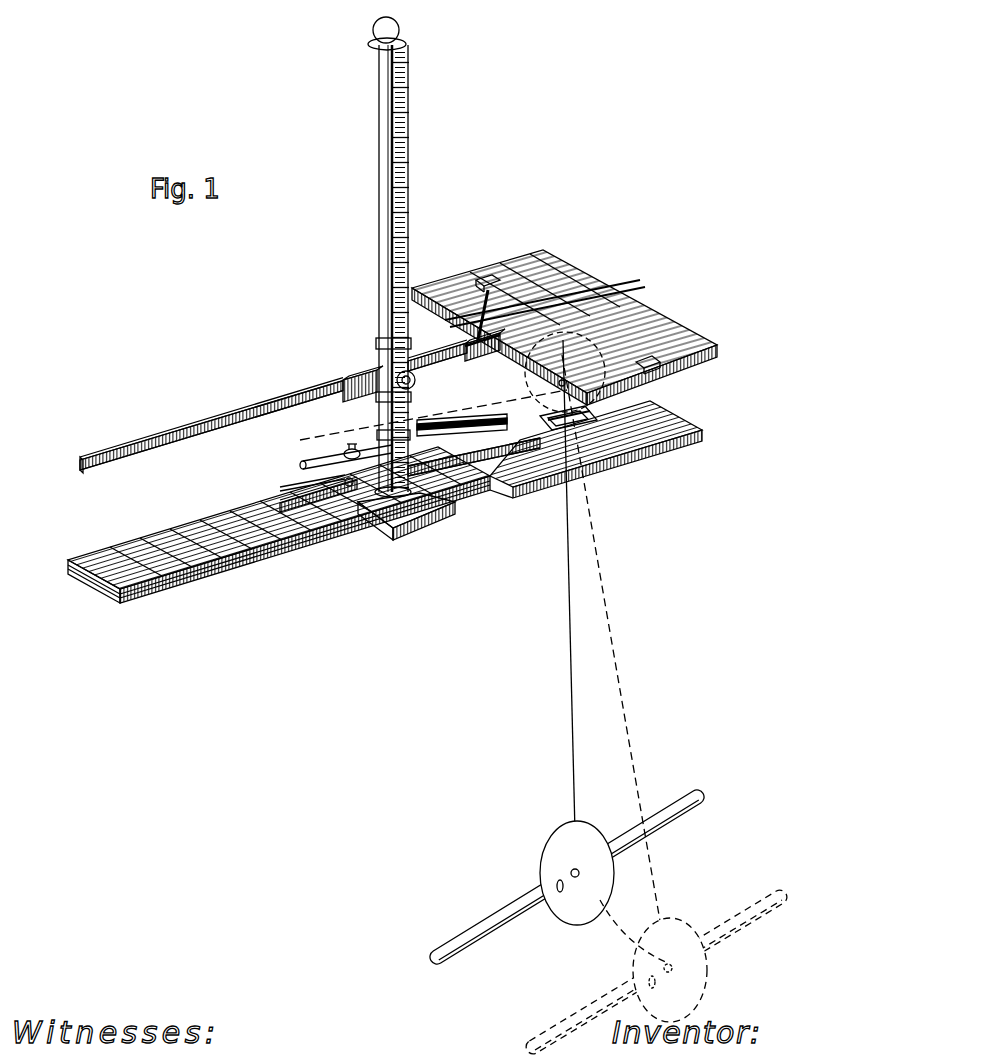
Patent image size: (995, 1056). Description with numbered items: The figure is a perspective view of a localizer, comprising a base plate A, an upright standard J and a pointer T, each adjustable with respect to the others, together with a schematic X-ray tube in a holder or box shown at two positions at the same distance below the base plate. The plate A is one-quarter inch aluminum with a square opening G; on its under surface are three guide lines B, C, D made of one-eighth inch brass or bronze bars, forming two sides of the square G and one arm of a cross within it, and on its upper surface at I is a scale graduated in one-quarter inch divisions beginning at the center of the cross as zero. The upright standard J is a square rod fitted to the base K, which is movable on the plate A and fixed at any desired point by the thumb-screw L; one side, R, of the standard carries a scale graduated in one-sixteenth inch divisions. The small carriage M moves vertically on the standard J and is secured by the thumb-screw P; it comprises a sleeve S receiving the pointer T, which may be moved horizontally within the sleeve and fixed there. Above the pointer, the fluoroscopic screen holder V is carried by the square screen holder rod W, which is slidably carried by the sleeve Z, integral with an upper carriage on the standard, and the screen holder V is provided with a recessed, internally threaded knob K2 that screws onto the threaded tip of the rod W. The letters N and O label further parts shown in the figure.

The upright standard J is at (378, 93).
The scale side of standard R is at (408, 103).
The fluoroscopic screen holder V is at (414, 290).
The column sleeve collar N is at (410, 347).
The sleeve Z is at (356, 374).
The screen holder rod W is at (328, 397).
The thumb-screw P is at (416, 380).
The knob K2 is at (485, 356).
The pointer T is at (485, 407).
The clamp post O is at (480, 313).
The square opening G is at (633, 404).
The base plate A is at (655, 432).
The thumb-screw L is at (352, 446).
The small carriage M is at (383, 442).
The scale I is at (232, 530).
The sleeve S is at (360, 485).
The base K is at (395, 522).
The guide line B is at (75, 565).
The guide line C is at (96, 586).
The guide line D is at (112, 600).